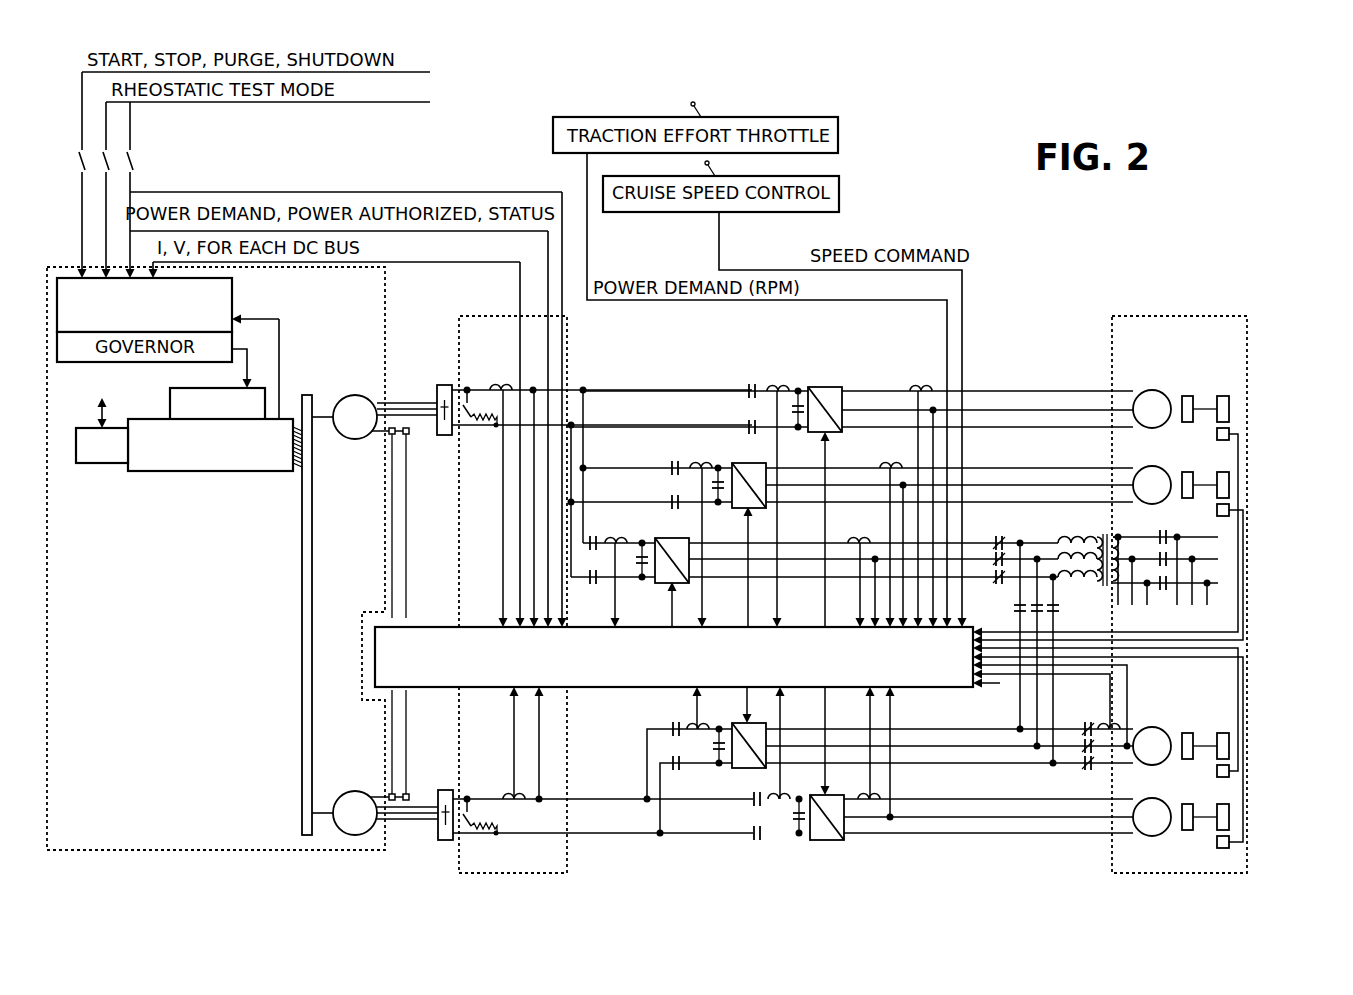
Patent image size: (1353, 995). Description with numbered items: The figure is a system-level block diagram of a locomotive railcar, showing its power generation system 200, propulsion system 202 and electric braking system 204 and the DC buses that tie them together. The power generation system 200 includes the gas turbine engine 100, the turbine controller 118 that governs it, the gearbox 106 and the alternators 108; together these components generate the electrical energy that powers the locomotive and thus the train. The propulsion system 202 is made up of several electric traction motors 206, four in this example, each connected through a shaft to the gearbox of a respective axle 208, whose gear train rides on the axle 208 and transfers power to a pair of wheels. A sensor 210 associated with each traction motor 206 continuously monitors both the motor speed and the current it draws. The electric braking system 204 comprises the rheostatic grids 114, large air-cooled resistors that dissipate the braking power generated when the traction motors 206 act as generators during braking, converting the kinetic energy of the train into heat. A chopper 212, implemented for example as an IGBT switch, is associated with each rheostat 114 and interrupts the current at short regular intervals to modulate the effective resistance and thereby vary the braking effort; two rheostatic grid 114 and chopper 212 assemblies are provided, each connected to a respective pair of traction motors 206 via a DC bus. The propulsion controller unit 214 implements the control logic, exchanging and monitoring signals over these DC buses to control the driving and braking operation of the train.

The gas turbine engine 100 is at (212, 473).
The gearbox 106 is at (312, 520).
The alternators 108 is at (350, 392).
The rheostatic grids 114 is at (483, 428).
The turbine controller 118 is at (228, 296).
The power generation system 200 is at (378, 292).
The propulsion system 202 is at (1195, 342).
The electric braking system 204 is at (497, 342).
The electric traction motor 206 is at (1150, 428).
The axle 208 is at (1227, 399).
The sensor 210 is at (1231, 436).
The chopper 212 is at (471, 408).
The propulsion controller unit 214 is at (928, 690).